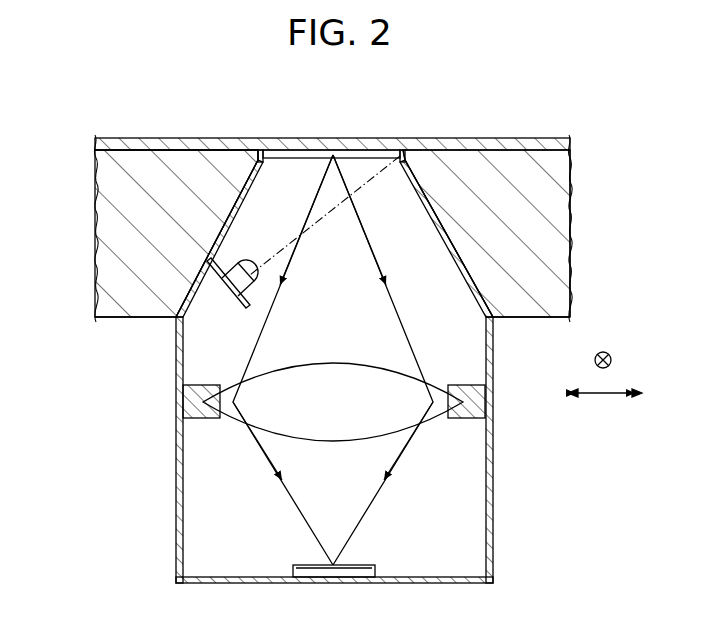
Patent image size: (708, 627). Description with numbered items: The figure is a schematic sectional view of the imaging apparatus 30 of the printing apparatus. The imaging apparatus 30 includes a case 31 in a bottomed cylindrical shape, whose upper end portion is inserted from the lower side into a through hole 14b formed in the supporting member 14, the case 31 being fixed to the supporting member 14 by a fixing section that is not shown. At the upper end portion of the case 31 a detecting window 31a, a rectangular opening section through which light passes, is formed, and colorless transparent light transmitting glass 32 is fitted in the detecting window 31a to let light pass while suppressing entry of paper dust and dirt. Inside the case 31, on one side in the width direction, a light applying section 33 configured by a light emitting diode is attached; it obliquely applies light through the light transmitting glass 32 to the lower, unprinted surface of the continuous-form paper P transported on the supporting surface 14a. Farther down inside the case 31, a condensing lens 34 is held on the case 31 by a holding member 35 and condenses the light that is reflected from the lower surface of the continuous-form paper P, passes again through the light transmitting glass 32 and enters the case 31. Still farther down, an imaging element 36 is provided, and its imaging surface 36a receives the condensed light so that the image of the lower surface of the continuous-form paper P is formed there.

The supporting member 14 is at (571, 181).
The supporting surface 14a is at (137, 138).
The through hole 14b is at (265, 150).
The continuous-form paper P is at (525, 138).
The imaging apparatus 30 is at (88, 430).
The case 31 is at (312, 337).
The detecting window 31a is at (403, 152).
The light transmitting glass 32 is at (365, 150).
The light applying section 33 is at (248, 262).
The condensing lens 34 is at (436, 390).
The holding member 35 is at (196, 386).
The imaging element 36 is at (364, 565).
The imaging surface 36a is at (310, 565).